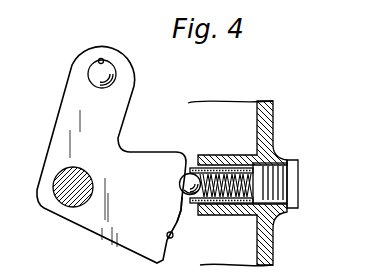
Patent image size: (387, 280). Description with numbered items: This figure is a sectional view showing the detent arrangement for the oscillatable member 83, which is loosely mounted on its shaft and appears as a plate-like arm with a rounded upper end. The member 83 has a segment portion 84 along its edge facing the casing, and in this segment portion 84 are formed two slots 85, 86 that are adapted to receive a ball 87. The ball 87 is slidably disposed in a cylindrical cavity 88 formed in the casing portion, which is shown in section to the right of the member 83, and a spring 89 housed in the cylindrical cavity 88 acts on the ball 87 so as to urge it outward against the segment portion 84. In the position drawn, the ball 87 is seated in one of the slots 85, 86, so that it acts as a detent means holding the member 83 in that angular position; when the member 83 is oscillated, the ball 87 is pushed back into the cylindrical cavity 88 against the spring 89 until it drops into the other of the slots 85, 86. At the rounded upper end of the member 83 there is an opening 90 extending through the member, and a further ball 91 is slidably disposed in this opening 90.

The oscillatable member 83 is at (163, 151).
The segment portion 84 is at (183, 216).
The slot 85 is at (179, 181).
The slot 86 is at (167, 236).
The ball 87 is at (182, 195).
The cylindrical cavity 88 is at (257, 185).
The spring 89 is at (242, 203).
The opening 90 is at (100, 58).
The ball 91 is at (92, 74).